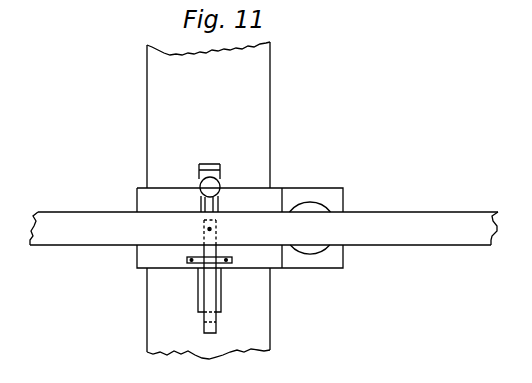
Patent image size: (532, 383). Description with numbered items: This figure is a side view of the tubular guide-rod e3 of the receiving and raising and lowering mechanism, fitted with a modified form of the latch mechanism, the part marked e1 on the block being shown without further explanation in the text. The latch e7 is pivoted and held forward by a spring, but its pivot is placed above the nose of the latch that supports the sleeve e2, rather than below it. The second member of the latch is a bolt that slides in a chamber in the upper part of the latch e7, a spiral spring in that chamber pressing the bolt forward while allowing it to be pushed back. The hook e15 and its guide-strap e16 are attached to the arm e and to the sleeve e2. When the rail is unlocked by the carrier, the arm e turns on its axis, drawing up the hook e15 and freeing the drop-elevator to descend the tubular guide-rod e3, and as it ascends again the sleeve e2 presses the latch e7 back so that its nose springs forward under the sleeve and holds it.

The arm e is at (281, 228).
The hole in block e1 is at (311, 203).
The sleeve e2 is at (240, 228).
The tubular guide-rod e3 is at (208, 200).
The latch e7 is at (199, 175).
The hook e15 is at (217, 321).
The guide-strap e16 is at (187, 260).